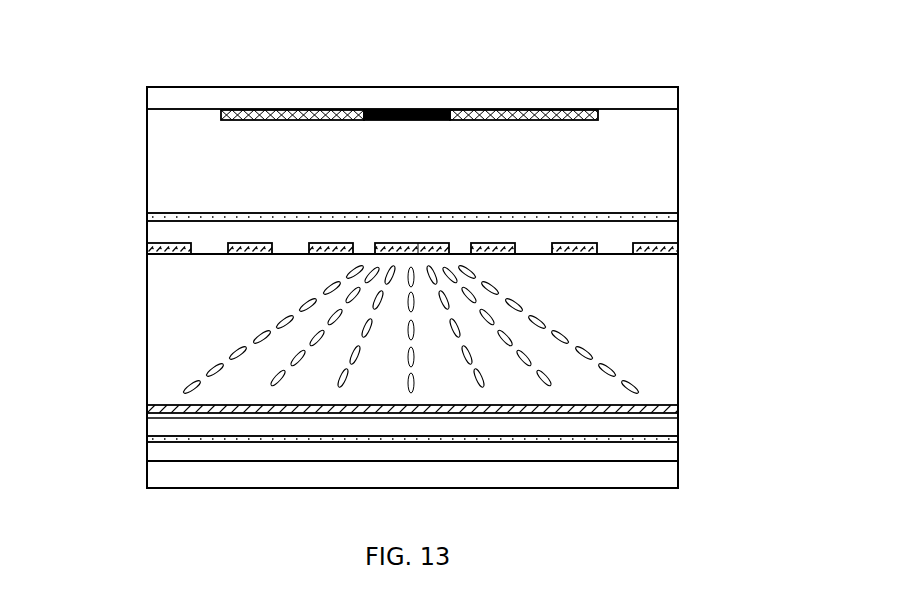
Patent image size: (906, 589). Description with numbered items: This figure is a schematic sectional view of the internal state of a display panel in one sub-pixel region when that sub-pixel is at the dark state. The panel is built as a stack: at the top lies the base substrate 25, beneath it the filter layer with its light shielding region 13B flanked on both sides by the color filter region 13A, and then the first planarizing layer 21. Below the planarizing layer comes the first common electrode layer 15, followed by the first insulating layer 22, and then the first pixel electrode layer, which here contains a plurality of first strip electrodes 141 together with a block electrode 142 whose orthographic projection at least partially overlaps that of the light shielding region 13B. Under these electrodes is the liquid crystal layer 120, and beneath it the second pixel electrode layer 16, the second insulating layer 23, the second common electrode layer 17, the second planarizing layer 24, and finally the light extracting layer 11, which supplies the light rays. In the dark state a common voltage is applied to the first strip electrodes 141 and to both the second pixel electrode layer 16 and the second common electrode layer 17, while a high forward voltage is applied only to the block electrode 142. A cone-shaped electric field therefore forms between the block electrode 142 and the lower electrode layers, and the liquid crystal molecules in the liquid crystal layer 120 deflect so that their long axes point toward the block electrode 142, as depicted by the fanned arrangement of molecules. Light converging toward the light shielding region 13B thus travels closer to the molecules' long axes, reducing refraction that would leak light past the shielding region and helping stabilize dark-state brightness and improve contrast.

The light extracting layer 11 is at (157, 480).
The color filter region 13A is at (281, 110).
The light shielding region 13B is at (374, 110).
The first common electrode layer 15 is at (650, 214).
The second pixel electrode layer 16 is at (150, 407).
The second common electrode layer 17 is at (150, 435).
The first planarizing layer 21 is at (170, 155).
The first insulating layer 22 is at (167, 233).
The second insulating layer 23 is at (657, 427).
The second planarizing layer 24 is at (657, 457).
The base substrate 25 is at (657, 103).
The liquid crystal layer 120 is at (657, 335).
The first strip electrodes 141 is at (650, 244).
The block electrode 142 is at (418, 252).